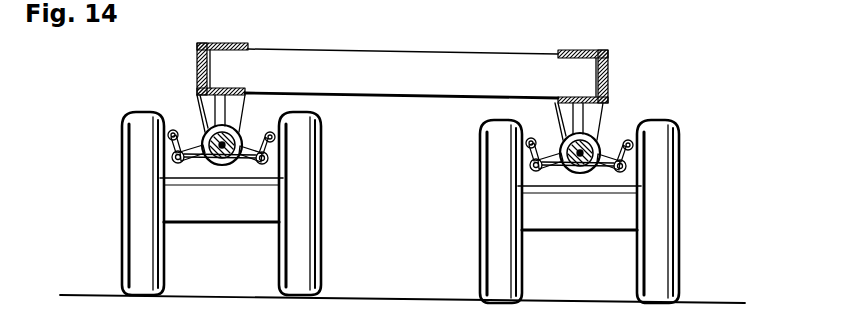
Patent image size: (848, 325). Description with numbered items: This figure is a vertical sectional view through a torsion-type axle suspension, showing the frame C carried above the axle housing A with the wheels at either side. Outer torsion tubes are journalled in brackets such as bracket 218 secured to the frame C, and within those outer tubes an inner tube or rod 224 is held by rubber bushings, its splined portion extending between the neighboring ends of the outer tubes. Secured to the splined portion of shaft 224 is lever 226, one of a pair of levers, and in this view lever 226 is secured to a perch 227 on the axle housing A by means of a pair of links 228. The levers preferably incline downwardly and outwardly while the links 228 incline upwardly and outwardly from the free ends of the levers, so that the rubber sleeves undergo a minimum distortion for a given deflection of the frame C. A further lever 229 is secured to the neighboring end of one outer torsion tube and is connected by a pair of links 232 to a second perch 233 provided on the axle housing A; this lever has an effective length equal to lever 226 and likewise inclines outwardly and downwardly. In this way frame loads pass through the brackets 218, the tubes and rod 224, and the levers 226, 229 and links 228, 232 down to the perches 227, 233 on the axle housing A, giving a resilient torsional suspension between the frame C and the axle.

The frame C is at (242, 47).
The inner tube or rod 224 is at (210, 106).
The bracket 218 is at (250, 102).
The lever 226 is at (283, 178).
The lever 229 is at (160, 178).
The axle bar A is at (235, 215).
The link 232 is at (190, 117).
The link 228 is at (266, 132).
The perch 233 is at (153, 113).
The perch 227 is at (286, 140).